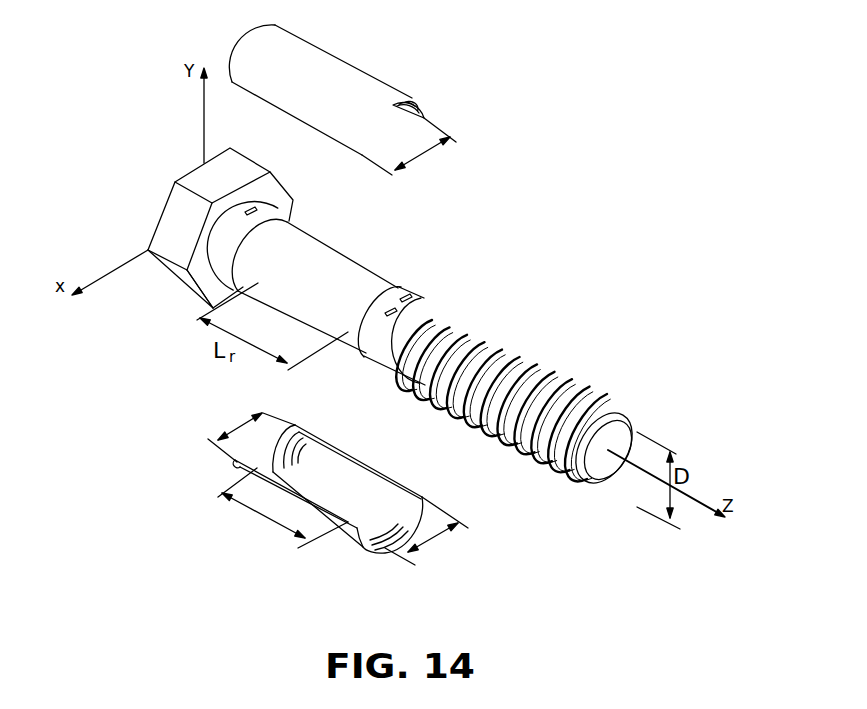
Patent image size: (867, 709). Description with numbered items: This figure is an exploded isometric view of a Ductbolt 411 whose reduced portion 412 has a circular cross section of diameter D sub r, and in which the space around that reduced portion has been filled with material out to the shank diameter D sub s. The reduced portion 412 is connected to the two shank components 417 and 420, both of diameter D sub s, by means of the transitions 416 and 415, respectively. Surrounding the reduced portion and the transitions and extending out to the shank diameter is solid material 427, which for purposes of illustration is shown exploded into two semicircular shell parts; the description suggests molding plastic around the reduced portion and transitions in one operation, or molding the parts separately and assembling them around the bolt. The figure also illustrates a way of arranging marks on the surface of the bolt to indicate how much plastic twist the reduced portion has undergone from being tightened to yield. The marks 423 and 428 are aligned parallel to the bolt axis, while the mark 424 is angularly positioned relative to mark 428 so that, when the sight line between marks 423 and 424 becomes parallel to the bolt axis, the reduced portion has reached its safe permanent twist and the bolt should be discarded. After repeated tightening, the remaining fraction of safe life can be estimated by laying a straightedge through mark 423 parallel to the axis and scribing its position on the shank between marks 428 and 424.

The Ductbolt 411 is at (608, 452).
The reduced portion 412 is at (310, 300).
The transition 415 is at (197, 298).
The transition 416 is at (360, 340).
The shank component 417 is at (377, 345).
The shank component 420 is at (222, 267).
The mark 423 is at (258, 207).
The mark 424 is at (407, 317).
The solid material 427 is at (367, 72).
The mark 428 is at (407, 294).